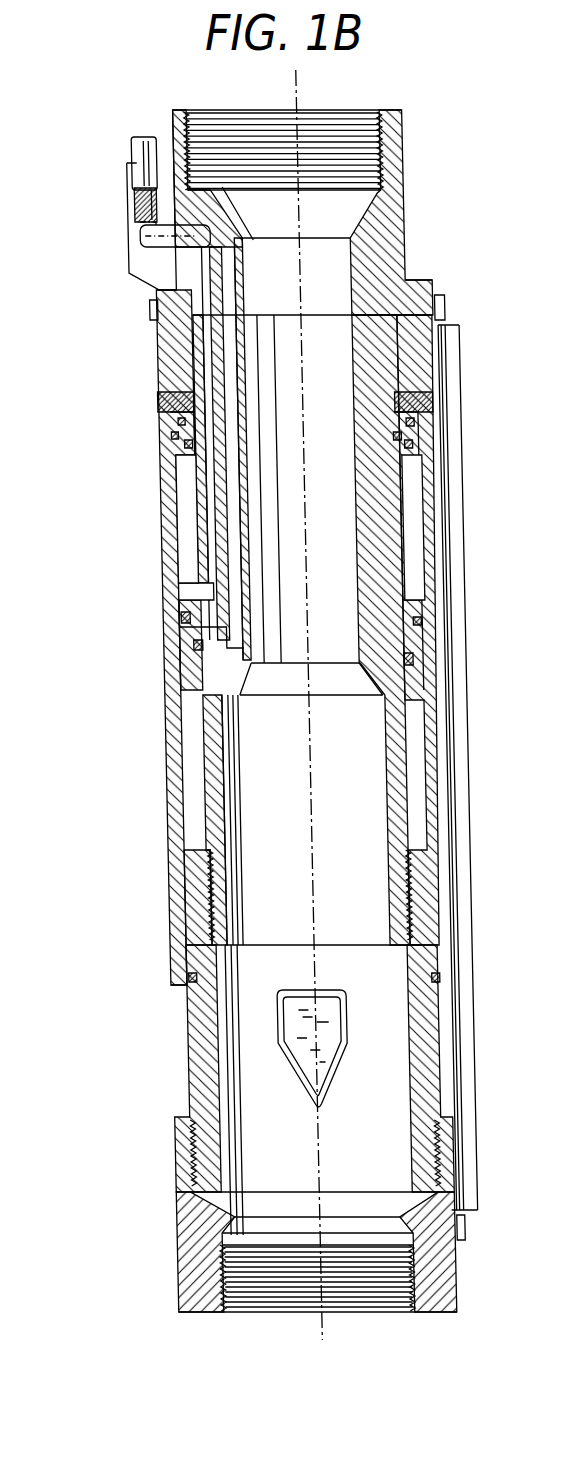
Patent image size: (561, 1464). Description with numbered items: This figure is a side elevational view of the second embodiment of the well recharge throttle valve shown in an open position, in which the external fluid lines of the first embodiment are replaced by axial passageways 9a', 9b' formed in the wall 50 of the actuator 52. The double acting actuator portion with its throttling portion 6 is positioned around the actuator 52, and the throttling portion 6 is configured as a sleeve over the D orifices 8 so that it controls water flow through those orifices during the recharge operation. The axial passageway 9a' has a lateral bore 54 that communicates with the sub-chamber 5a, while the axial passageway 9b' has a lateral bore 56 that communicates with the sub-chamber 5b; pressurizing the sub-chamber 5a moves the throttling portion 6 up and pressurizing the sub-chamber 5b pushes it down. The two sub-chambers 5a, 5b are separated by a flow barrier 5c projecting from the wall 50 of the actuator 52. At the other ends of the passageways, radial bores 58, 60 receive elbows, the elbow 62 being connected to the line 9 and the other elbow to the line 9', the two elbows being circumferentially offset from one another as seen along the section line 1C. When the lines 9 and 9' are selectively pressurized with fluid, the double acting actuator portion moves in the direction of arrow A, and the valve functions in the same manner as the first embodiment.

The radial bore 58 is at (214, 192).
The radial bore 60 is at (237, 215).
The elbow 62 is at (140, 248).
The line 9 is at (115, 152).
The line 9' is at (113, 191).
The axial passageway 9a' is at (270, 443).
The axial passageway 9b' is at (287, 453).
The wall of the actuator 50 is at (322, 591).
The actuator 52 is at (229, 866).
The lateral bore 54 is at (207, 584).
The lateral bore 56 is at (239, 698).
The sub-chamber 5a is at (187, 527).
The sub-chamber 5b is at (190, 639).
The flow barrier 5c is at (188, 621).
The throttling portion 6 is at (172, 944).
The D orifices 8 is at (325, 1040).
The section line 1C is at (122, 238).
The arrow A is at (122, 795).